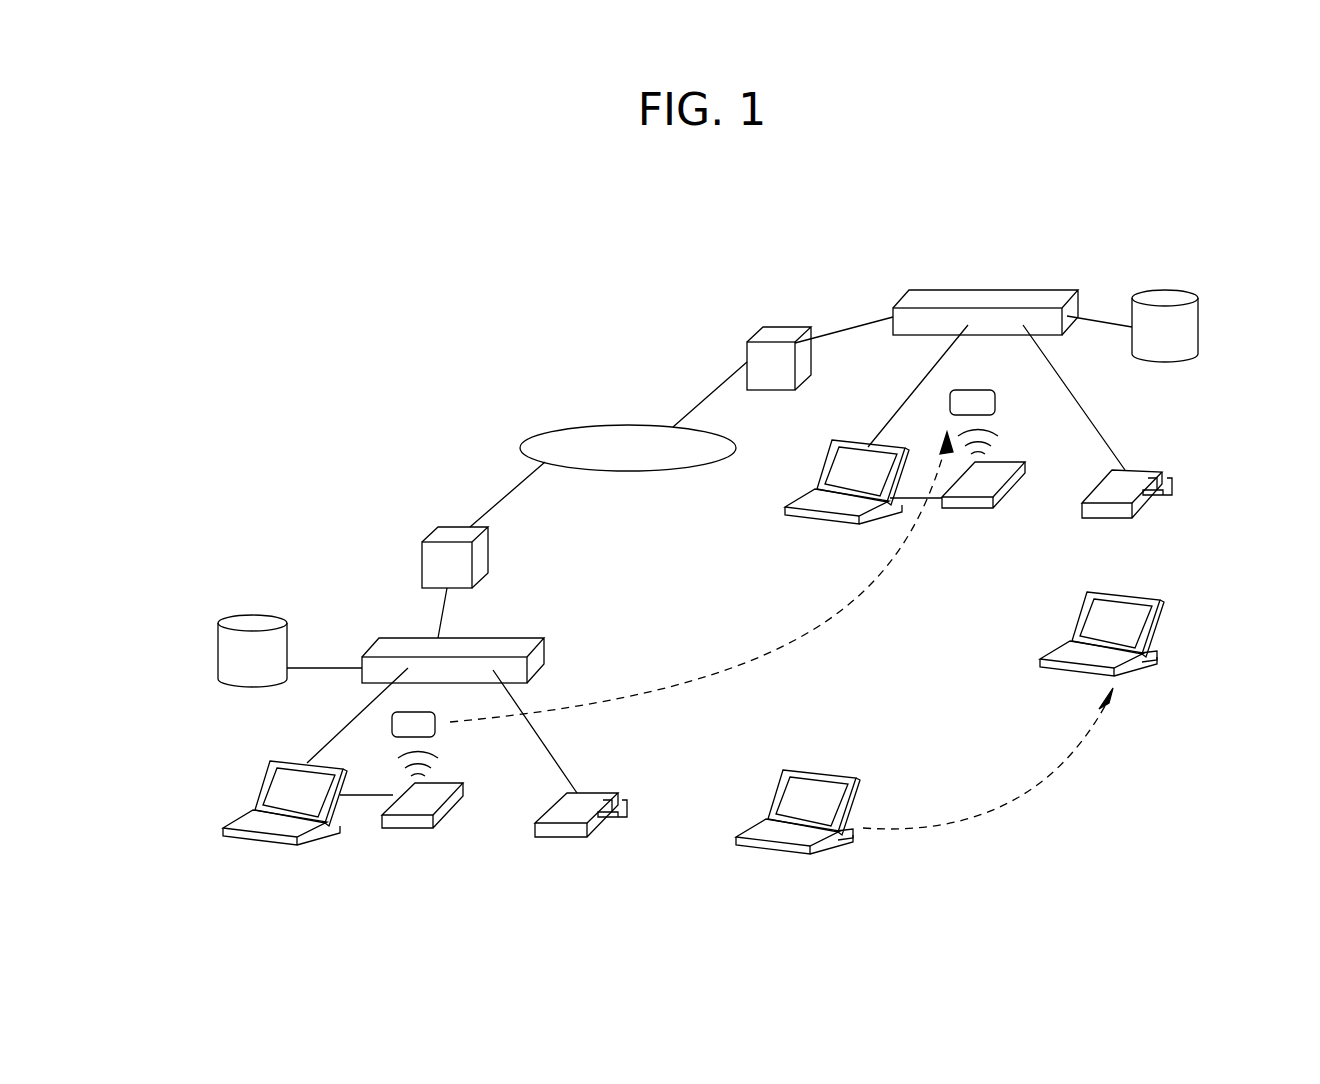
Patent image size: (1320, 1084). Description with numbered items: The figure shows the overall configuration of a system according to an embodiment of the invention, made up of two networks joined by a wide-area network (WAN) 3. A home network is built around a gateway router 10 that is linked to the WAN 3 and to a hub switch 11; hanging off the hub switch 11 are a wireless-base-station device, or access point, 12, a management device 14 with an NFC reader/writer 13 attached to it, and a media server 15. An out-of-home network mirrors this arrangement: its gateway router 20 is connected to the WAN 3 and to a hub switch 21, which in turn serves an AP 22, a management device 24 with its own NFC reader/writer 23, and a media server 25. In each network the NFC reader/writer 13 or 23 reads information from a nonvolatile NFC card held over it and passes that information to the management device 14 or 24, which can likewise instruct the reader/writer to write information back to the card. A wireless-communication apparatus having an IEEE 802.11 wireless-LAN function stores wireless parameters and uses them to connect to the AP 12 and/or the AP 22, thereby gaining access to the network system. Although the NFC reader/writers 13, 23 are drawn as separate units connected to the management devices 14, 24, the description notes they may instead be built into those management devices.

The wide-area network 3 is at (557, 427).
The gateway router 10 is at (452, 525).
The hub switch 11 is at (488, 637).
The wireless-base-station device 12 is at (606, 790).
The NFC reader/writer 13 is at (440, 783).
The management device 14 is at (264, 778).
The media server 15 is at (260, 613).
The gateway router 20 is at (757, 330).
The hub switch 21 is at (995, 288).
The AP 22 is at (1152, 468).
The NFC reader/writer 23 is at (1005, 460).
The management device 24 is at (821, 468).
The media server 25 is at (1168, 288).